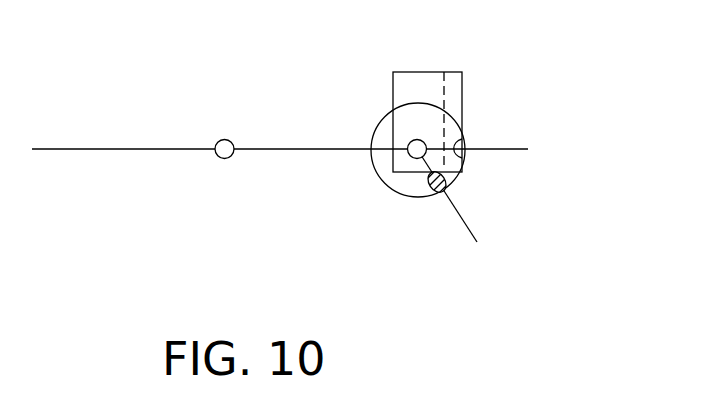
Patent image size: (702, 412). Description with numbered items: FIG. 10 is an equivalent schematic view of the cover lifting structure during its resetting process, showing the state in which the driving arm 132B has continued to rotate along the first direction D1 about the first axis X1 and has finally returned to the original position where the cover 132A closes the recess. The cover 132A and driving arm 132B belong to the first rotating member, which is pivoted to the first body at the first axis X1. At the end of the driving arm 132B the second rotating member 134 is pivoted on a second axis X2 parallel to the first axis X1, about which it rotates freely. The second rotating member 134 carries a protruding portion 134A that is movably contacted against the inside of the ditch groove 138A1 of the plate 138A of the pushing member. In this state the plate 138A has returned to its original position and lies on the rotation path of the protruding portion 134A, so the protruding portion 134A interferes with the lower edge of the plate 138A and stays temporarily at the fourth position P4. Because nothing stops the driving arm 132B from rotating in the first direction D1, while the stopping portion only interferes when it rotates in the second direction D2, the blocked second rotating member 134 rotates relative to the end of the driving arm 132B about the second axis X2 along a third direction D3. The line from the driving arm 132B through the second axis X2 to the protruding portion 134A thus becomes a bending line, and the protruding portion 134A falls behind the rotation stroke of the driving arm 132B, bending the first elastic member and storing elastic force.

The cover 132A is at (115, 148).
The driving arm 132B is at (288, 148).
The first axis X1 is at (221, 141).
The second axis X2 is at (407, 153).
The first direction D1 is at (256, 119).
The second direction D2 is at (254, 179).
The third direction D3 is at (548, 182).
The plate 138A is at (400, 72).
The ditch groove 138A1 is at (446, 97).
The second rotating member 134 is at (388, 183).
The protruding portion 134A is at (429, 193).
The fourth position P4 is at (443, 199).